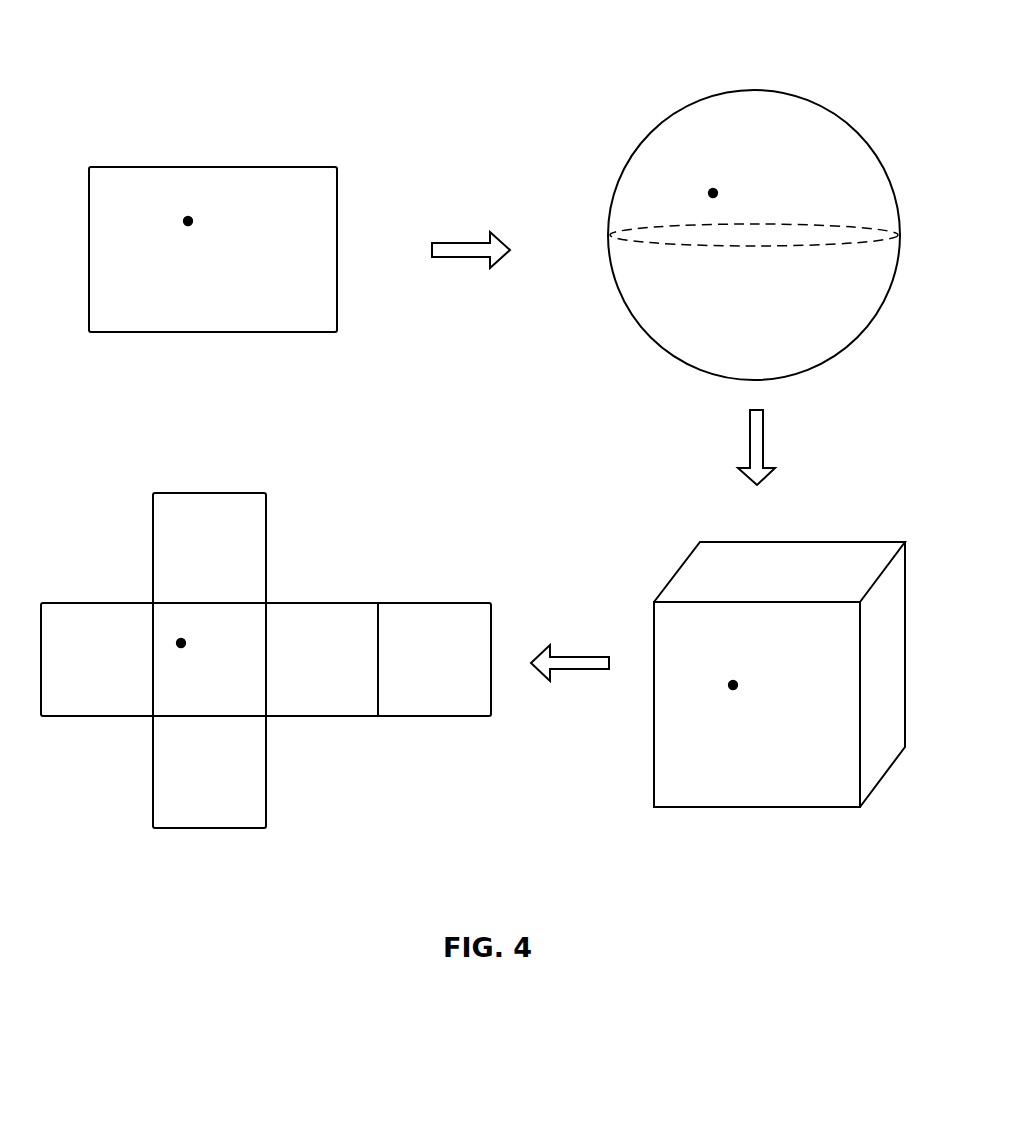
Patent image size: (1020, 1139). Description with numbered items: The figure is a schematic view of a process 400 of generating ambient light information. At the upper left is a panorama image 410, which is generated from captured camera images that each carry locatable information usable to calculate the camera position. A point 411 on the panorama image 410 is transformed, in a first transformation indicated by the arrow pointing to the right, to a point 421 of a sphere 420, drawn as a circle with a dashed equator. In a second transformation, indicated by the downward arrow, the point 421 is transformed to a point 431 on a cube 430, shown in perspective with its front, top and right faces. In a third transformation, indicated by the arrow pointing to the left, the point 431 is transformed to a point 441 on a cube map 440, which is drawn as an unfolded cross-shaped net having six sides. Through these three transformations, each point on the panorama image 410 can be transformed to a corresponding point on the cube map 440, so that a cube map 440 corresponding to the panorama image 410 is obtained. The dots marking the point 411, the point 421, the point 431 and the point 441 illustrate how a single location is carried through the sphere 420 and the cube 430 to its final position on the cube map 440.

The process of generating ambient light information 400 is at (195, 58).
The panorama image 410 is at (270, 166).
The point on the panorama image 411 is at (188, 221).
The sphere 420 is at (782, 90).
The point of the sphere 421 is at (713, 193).
The cube 430 is at (828, 540).
The point on the cube 431 is at (733, 685).
The cube map 440 is at (250, 488).
The point on the cube map 441 is at (181, 643).